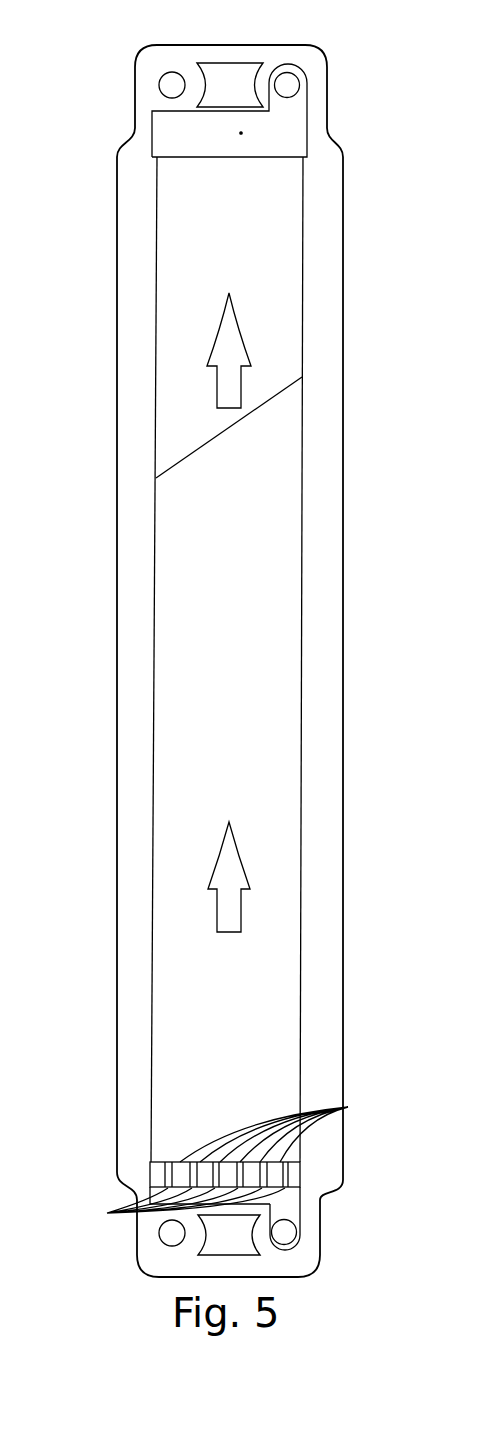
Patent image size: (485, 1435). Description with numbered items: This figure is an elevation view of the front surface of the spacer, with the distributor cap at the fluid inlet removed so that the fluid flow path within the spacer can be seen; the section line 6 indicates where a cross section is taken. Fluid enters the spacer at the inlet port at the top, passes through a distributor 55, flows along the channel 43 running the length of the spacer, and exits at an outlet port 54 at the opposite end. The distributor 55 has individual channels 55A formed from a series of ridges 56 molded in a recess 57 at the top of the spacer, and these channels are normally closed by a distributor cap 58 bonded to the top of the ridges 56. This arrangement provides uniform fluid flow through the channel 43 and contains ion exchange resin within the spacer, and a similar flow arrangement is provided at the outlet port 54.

The channel 43 is at (283, 685).
The outlet port 54 is at (293, 82).
The distributor cap 58 is at (158, 118).
The section line 6- 6 is at (322, 6).
The recess 57 is at (155, 1172).
The distributor 55 is at (298, 1194).
The ridges 56 is at (328, 1272).
The individual channels 55A is at (174, 1206).